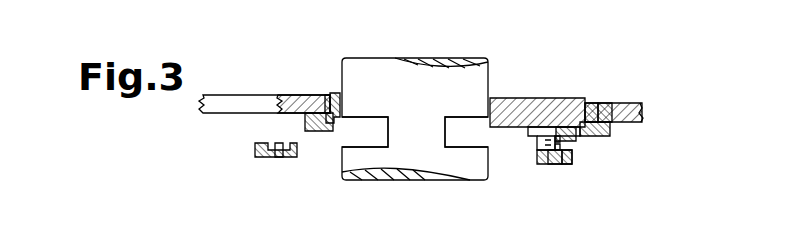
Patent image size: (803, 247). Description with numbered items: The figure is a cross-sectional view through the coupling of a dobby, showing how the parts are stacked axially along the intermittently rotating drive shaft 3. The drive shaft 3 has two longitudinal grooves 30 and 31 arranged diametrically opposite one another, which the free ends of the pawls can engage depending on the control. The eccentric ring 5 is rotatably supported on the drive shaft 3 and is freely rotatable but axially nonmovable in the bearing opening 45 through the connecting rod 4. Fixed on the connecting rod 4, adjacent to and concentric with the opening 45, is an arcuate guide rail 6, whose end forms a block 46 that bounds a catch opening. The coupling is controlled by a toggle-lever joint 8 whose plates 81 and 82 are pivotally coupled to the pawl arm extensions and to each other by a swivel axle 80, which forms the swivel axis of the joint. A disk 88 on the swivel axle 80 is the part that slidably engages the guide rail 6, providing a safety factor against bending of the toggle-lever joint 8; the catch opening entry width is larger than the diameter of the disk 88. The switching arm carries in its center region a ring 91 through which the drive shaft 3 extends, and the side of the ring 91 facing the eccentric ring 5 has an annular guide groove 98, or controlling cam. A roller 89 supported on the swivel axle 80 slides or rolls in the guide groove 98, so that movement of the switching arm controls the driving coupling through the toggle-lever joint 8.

The drive shaft 3 is at (410, 87).
The connecting rod 4 is at (243, 105).
The bearing opening 45 is at (325, 98).
The eccentric ring 5 is at (330, 95).
The guide rail 6 is at (314, 134).
The disk 88 is at (540, 128).
The swivel axle 80 is at (566, 100).
The block 46 is at (611, 133).
The plate 81 is at (568, 140).
The plate 82 is at (572, 150).
The toggle-lever joint 8 is at (533, 149).
The roller 89 is at (543, 165).
The guide groove 98 is at (556, 165).
The ring 91 is at (572, 165).
The longitudinal groove 31 is at (352, 150).
The longitudinal groove 30 is at (480, 150).